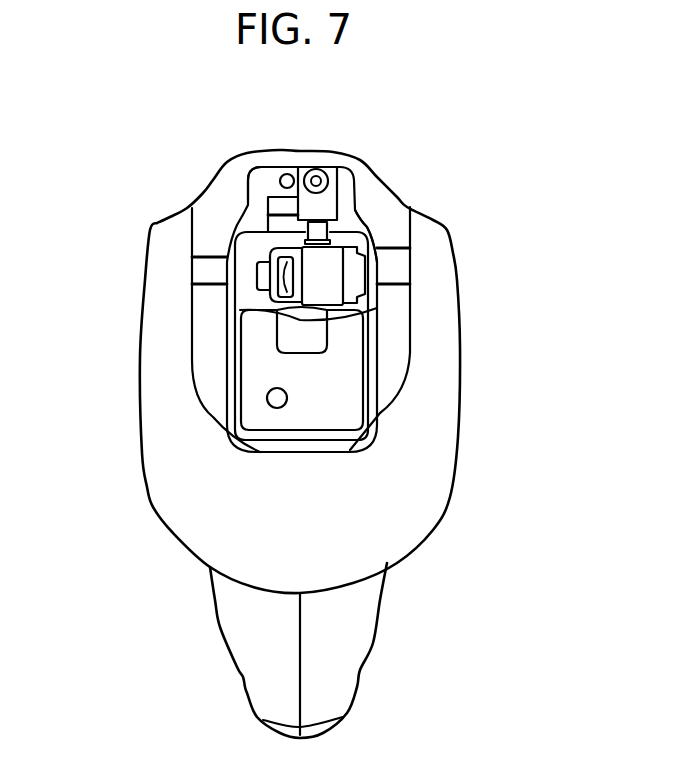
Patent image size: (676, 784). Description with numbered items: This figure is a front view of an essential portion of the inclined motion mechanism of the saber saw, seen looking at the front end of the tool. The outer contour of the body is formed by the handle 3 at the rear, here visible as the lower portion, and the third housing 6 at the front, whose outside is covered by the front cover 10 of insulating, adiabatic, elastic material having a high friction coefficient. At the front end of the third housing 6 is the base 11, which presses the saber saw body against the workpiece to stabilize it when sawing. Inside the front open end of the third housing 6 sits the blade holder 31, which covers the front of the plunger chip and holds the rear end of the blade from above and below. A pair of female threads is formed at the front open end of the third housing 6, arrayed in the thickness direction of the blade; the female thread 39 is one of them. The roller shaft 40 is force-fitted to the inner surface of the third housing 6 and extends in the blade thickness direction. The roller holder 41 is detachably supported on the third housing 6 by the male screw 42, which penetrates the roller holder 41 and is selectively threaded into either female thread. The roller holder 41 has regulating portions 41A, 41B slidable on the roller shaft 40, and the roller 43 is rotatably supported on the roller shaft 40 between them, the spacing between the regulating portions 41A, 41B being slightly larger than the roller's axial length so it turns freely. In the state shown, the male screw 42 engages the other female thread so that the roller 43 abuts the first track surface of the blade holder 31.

The handle 3 is at (360, 623).
The third housing 6 is at (263, 180).
The front cover 10 is at (380, 193).
The base 11 is at (363, 380).
The blade holder 31 is at (263, 297).
The female thread 39 is at (287, 173).
The roller shaft 40 is at (283, 220).
The roller holder 41 is at (323, 203).
The regulating portion 41A is at (337, 228).
The regulating portion 41B is at (297, 232).
The male screw 42 is at (316, 169).
The roller 43 is at (325, 238).